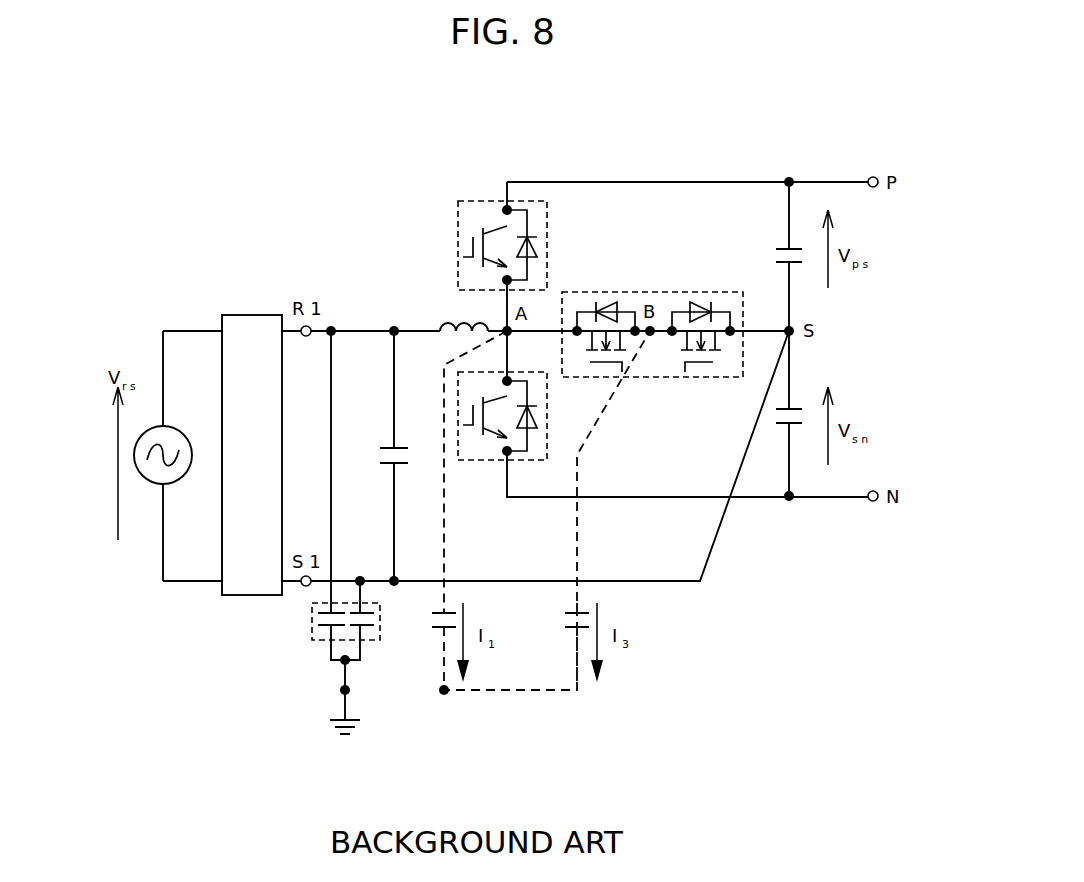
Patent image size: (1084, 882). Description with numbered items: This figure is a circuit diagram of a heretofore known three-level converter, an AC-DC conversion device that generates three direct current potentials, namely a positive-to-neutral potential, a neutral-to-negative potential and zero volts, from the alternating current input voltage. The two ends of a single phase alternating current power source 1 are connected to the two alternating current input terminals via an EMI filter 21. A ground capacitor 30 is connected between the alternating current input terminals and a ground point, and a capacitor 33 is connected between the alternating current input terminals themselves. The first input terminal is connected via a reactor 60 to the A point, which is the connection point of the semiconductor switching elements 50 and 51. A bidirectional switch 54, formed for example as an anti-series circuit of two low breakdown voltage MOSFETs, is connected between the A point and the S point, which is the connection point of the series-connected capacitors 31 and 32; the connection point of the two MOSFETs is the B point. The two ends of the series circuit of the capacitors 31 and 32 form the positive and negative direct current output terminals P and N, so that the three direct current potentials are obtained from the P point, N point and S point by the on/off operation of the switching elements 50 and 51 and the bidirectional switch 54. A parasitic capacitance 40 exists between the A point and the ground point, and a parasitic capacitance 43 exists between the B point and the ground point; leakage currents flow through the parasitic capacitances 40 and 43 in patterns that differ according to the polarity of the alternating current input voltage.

The single phase alternating current power source 1 is at (155, 478).
The EMI filter 21 is at (247, 314).
The ground capacitor 30 is at (310, 646).
The capacitor 31 is at (784, 246).
The capacitor 32 is at (776, 428).
The capacitor 33 is at (373, 464).
The parasitic capacitance 40 is at (430, 636).
The parasitic capacitance 43 is at (564, 636).
The semiconductor switching element 50 is at (478, 200).
The semiconductor switching element 51 is at (478, 463).
The bidirectional switch 54 is at (646, 290).
The reactor 60 is at (430, 310).